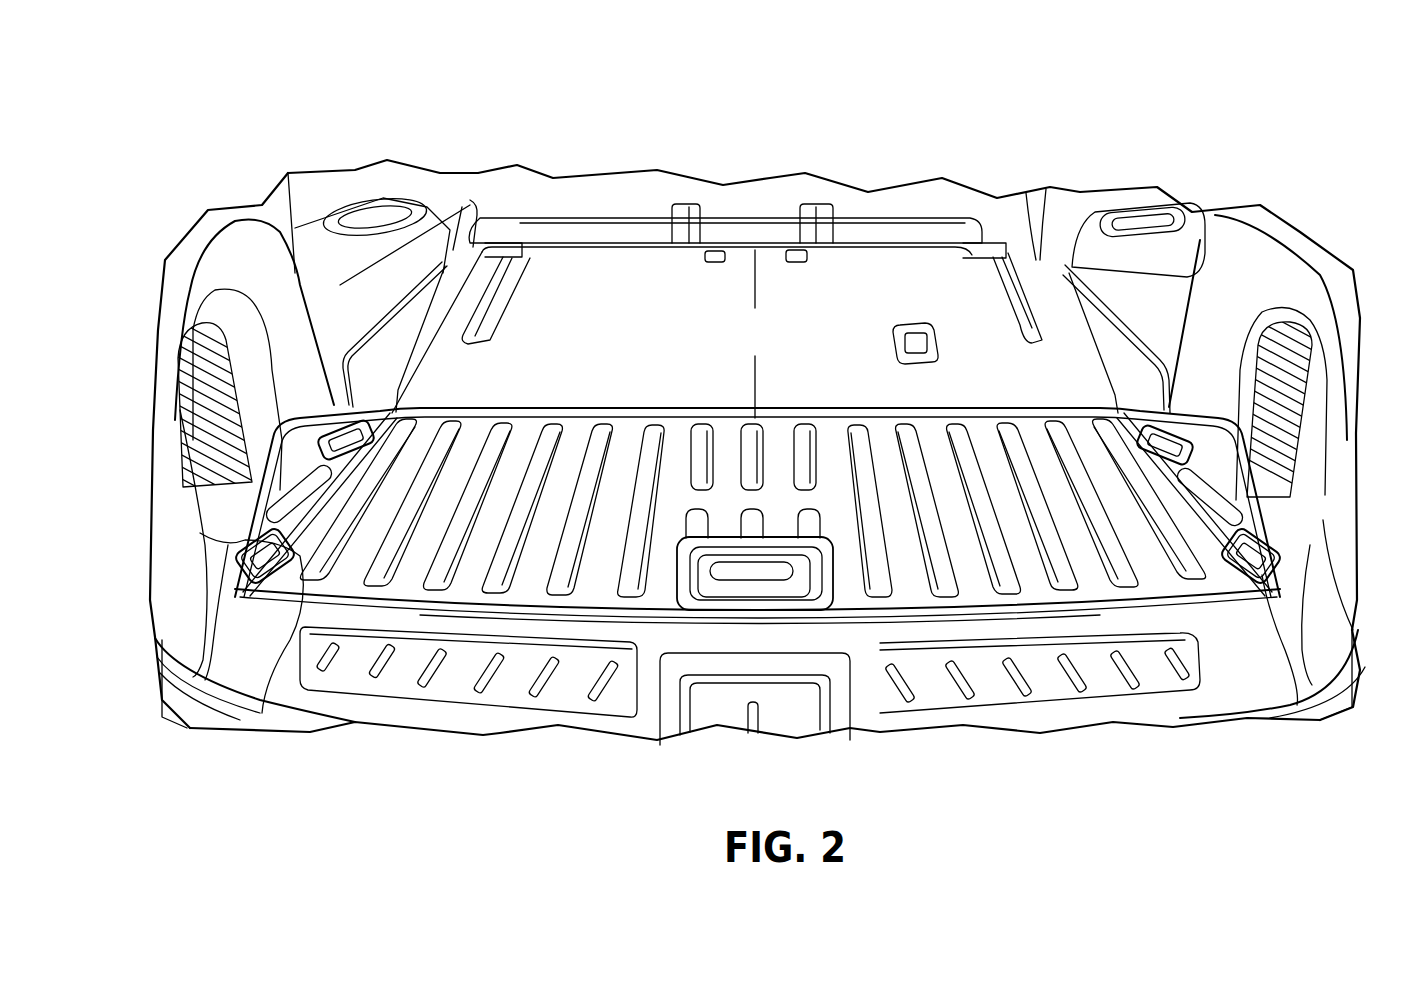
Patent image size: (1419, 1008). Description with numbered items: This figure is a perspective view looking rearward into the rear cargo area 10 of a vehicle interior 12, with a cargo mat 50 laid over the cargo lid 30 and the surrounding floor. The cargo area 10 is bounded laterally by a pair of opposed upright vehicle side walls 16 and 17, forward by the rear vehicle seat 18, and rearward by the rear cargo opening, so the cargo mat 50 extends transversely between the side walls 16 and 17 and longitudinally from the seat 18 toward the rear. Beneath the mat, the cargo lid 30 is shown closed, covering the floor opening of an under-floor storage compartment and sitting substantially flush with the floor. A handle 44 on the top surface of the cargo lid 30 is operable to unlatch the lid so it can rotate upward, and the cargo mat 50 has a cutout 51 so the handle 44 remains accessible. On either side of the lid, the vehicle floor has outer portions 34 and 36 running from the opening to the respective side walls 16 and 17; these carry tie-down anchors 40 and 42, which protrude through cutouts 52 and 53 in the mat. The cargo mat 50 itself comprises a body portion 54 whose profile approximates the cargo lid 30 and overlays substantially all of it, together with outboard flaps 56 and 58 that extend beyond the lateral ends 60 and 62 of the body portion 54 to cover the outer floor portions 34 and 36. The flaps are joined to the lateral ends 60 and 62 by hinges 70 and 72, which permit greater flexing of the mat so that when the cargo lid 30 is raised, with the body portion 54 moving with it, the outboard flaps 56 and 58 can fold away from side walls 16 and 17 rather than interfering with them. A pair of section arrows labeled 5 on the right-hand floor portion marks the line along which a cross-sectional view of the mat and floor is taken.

The rear cargo area 10 is at (634, 305).
The vehicle interior 12 is at (768, 200).
The vehicle side wall 16 is at (215, 270).
The vehicle side wall 17 is at (1252, 300).
The rear vehicle seat 18 is at (742, 350).
The cargo lid 30 is at (903, 590).
The outer portion of vehicle floor 34 is at (255, 512).
The outer portion of vehicle floor 36 is at (1244, 500).
The tie-down anchor 40 is at (162, 697).
The tie-down anchor 42 is at (1360, 684).
The handle 44 is at (718, 587).
The cargo mat 50 is at (973, 588).
The cutout 51 is at (718, 535).
The cutout 52 is at (262, 552).
The cutout 53 is at (1260, 565).
The body portion 54 is at (1087, 573).
The outboard flap 56 is at (277, 485).
The outboard flap 58 is at (1233, 435).
The lateral end 60 is at (393, 458).
The lateral end 62 is at (1118, 462).
The hinge 70 is at (262, 713).
The hinge 72 is at (1258, 567).
The section line 5- 5 is at (1160, 500).